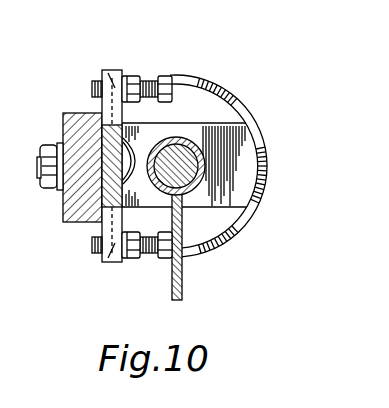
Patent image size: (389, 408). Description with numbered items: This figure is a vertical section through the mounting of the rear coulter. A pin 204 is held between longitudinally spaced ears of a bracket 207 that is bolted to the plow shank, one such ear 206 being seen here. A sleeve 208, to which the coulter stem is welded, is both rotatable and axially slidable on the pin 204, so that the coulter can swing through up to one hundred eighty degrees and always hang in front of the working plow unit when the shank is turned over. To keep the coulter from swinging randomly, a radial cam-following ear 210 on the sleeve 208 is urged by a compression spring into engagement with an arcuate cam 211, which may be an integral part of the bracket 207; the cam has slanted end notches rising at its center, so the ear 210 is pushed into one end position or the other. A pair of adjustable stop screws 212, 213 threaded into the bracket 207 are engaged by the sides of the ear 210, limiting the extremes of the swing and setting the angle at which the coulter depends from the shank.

The pin 204 is at (167, 182).
The ear of bracket 206 is at (239, 136).
The bracket 207 is at (106, 73).
The sleeve 208 is at (180, 138).
The cam-following ear 210 is at (183, 268).
The arcuate cam 211 is at (243, 223).
The adjustable stop screw 212 is at (171, 78).
The adjustable stop screw 213 is at (168, 253).